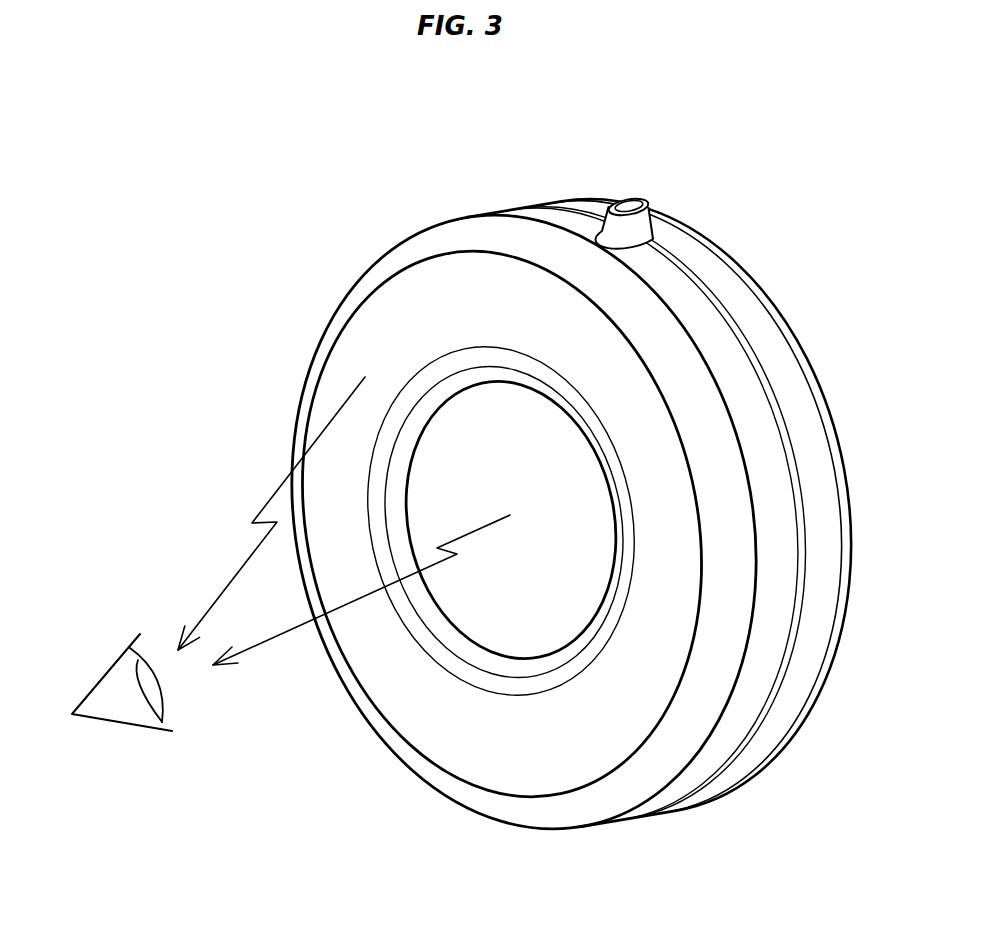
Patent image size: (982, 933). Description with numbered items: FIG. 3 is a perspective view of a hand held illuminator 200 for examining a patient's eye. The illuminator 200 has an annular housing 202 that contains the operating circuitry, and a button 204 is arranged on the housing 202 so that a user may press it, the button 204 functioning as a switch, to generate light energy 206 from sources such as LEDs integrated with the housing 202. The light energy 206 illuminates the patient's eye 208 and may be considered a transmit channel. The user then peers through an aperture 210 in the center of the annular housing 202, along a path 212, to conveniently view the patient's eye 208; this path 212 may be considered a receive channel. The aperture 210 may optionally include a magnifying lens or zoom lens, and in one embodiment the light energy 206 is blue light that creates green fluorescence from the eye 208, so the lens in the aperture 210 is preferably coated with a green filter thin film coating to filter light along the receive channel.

The hand held illuminator 200 is at (763, 165).
The annular housing 202 is at (520, 760).
The button 204 is at (605, 202).
The light energy 206 is at (275, 492).
The patient's eye 208 is at (102, 727).
The aperture 210 is at (480, 460).
The path 212 is at (280, 637).